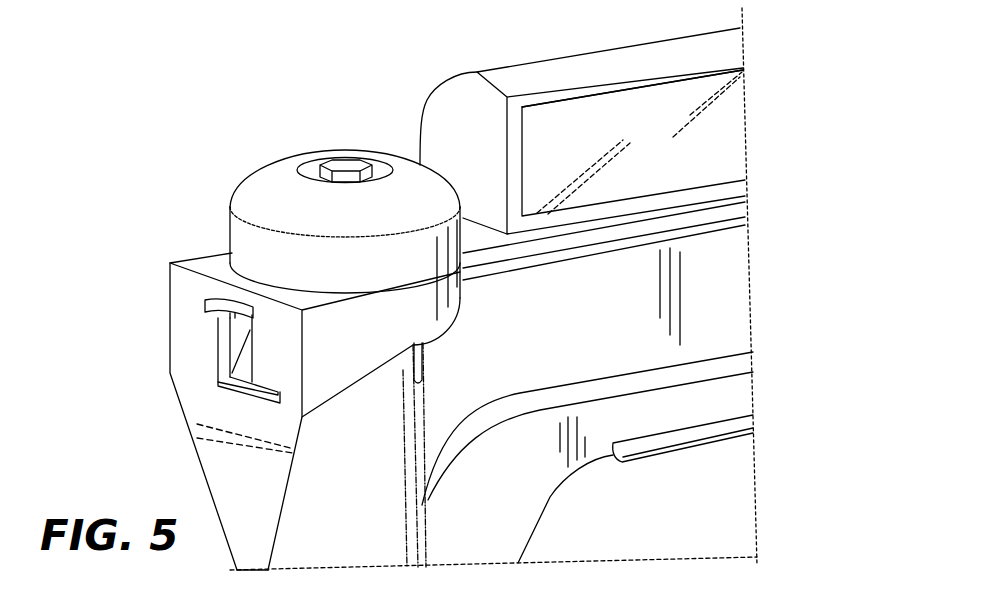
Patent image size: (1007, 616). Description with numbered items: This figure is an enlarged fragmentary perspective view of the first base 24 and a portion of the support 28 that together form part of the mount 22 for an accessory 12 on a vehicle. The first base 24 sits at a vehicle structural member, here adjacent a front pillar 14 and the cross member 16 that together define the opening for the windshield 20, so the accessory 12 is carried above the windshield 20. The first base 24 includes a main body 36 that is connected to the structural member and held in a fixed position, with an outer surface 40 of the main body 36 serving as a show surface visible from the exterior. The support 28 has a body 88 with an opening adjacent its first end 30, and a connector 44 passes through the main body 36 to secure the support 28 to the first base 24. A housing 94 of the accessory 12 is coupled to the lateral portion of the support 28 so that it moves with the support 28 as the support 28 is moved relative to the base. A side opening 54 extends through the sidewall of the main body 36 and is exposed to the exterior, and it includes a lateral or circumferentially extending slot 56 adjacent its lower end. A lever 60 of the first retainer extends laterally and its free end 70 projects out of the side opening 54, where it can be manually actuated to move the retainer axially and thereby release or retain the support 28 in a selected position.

The accessory 12 is at (562, 52).
The housing 94 is at (675, 53).
The mount 22 is at (274, 189).
The first base 24 is at (274, 197).
The first end 30 is at (233, 243).
The body 88 is at (293, 160).
The connector 44 is at (351, 165).
The support 28 is at (728, 217).
The cross member 16 is at (722, 283).
The windshield 20 is at (737, 492).
The front pillar 14 is at (363, 550).
The main body 36 is at (200, 405).
The outer surface 40 is at (203, 416).
The side opening 54 is at (220, 355).
The lever 60 is at (227, 305).
The free end 70 is at (213, 308).
The slot 56 is at (263, 399).